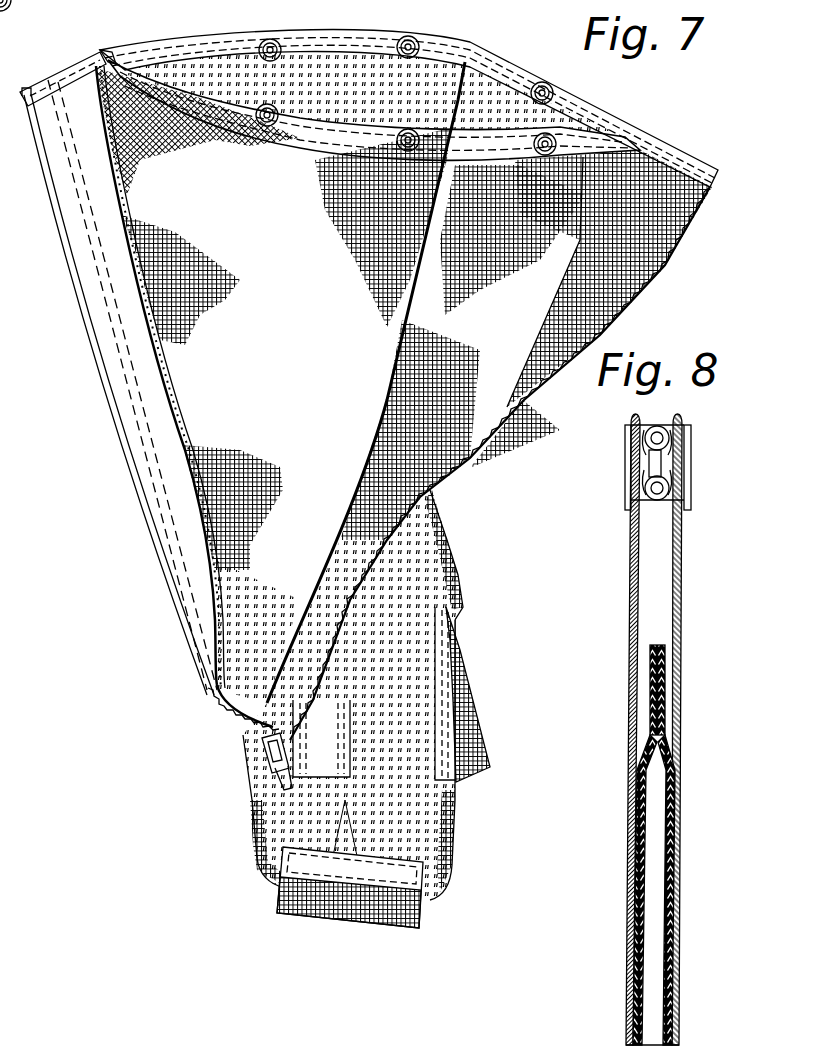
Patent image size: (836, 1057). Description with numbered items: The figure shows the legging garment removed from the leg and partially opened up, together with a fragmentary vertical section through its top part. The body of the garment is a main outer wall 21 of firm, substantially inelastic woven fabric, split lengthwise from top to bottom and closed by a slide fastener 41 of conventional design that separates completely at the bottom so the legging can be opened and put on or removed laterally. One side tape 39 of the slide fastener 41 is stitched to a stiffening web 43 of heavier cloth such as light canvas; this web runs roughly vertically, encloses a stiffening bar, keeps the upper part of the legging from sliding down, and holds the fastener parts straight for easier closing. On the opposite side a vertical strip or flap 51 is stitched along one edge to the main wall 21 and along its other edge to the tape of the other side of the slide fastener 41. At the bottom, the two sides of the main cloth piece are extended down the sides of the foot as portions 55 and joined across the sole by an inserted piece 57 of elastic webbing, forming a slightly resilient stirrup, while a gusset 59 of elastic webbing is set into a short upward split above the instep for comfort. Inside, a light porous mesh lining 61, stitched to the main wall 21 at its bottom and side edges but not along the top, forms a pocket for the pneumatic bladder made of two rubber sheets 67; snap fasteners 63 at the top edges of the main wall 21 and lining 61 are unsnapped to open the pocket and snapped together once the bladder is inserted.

In FIG. 7, the main outer wall 21 is at (213, 60).
In FIG. 8, the main outer wall 21 is at (685, 597).
In FIG. 7, the side tape of slide fastener 39 is at (243, 744).
In FIG. 7, the slide fastener 41 is at (466, 466).
In FIG. 7, the stiffening web 43 is at (118, 428).
In FIG. 7, the vertical strip or flap 51 is at (321, 738).
In FIG. 7, the foot extensions of main cloth piece 55 is at (247, 812).
In FIG. 7, the inserted piece of elastic webbing 57 is at (276, 886).
In FIG. 7, the gusset 59 is at (490, 752).
In FIG. 7, the lining 61 is at (652, 280).
In FIG. 8, the lining 61 is at (630, 597).
In FIG. 7, the snap fasteners 63 is at (292, 30).
In FIG. 8, the snap fasteners 63 is at (664, 508).
In FIG. 8, the rubber sheets of bladder 67 is at (664, 745).